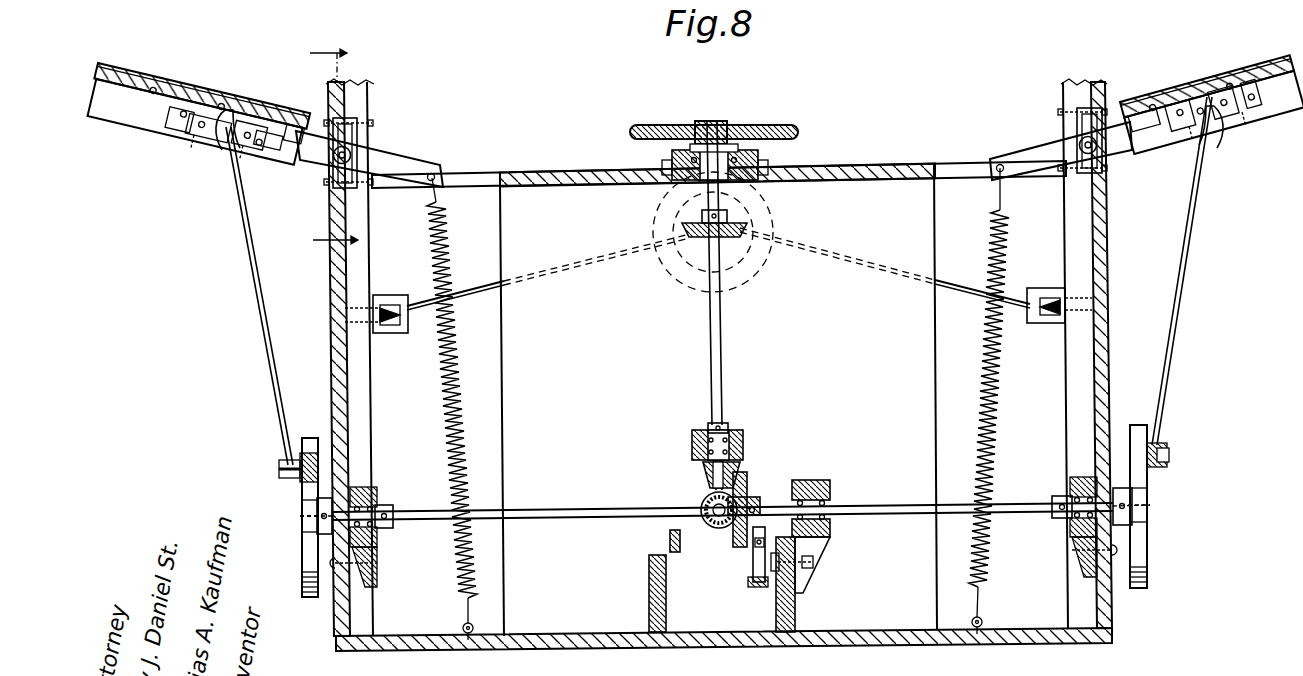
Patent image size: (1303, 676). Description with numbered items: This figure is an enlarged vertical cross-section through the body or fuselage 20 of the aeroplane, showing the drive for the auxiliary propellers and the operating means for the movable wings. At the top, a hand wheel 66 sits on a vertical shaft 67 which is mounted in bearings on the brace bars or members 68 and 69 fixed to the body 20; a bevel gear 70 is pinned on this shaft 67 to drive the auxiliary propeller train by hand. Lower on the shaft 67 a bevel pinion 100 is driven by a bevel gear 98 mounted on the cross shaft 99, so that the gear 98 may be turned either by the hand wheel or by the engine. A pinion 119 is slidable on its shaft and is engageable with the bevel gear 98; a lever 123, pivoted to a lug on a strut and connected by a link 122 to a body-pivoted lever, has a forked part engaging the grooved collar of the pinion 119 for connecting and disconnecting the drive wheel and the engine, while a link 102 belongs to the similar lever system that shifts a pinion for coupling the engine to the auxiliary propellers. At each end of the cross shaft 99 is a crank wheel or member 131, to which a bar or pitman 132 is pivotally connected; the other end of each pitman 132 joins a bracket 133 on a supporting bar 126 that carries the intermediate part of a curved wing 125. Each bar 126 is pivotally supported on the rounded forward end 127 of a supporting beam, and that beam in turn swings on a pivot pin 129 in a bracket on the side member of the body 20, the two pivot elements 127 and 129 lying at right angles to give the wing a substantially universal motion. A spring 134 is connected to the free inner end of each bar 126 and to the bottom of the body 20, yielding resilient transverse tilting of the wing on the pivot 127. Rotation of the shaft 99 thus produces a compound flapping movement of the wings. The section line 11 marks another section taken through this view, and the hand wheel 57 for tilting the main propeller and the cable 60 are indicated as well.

The section line 11 is at (318, 150).
The body or fuselage 20 is at (337, 270).
The hand wheel 57 is at (780, 213).
The cable 60 is at (952, 285).
The hand wheel 66 is at (763, 123).
The vertical shaft 67 is at (722, 310).
The brace bar 68 is at (815, 168).
The brace bar 69 is at (745, 437).
The bevel gear 70 is at (740, 228).
The bevel gear 98 is at (748, 492).
The shaft 99 is at (850, 505).
The bevel pinion 100 is at (707, 482).
The link 102 is at (681, 547).
The pinion 119 is at (705, 500).
The link 122 is at (770, 546).
The lever 123 is at (753, 561).
The wing 125 is at (123, 100).
The supporting bar 126 is at (317, 165).
The rounded forward end 127 is at (352, 154).
The pivot pin 129 is at (357, 136).
The crank wheel 131 is at (313, 557).
The bar or pitman 132 is at (262, 340).
The bracket 133 is at (213, 145).
The spring 134 is at (445, 382).